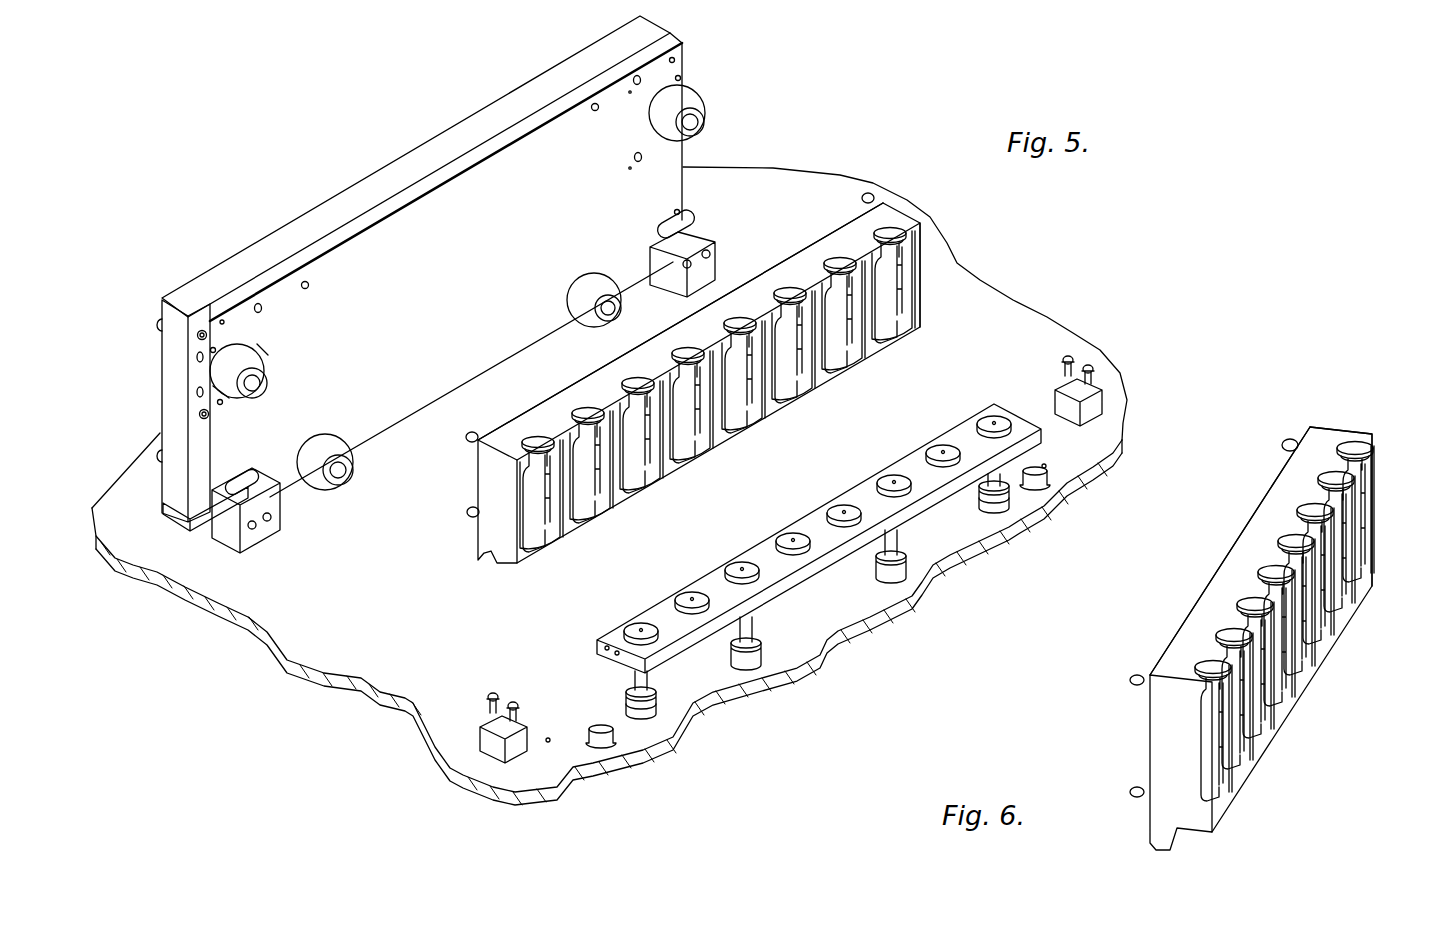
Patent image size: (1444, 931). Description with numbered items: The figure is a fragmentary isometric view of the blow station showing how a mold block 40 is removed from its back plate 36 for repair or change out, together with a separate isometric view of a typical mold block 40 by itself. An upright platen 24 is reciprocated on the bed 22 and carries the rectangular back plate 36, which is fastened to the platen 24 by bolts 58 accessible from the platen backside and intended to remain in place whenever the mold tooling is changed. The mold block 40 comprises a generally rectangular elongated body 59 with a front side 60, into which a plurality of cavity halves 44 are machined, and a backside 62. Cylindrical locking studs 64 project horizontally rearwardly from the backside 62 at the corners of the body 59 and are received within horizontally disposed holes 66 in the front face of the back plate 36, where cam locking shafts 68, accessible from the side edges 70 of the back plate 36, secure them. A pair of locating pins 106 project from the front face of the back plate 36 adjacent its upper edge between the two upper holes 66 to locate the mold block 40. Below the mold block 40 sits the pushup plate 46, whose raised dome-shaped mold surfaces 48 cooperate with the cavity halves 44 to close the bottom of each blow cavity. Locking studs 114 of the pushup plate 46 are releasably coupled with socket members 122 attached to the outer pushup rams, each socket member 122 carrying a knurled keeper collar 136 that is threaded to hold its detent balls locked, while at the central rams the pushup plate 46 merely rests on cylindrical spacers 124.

In FIG. 5, the bed 22 is at (385, 678).
In FIG. 5, the platen 24 is at (175, 365).
In FIG. 5, the back plate 36 is at (430, 171).
In FIG. 5, the mold block 40 is at (700, 350).
In FIG. 6, the mold block 40 is at (1248, 597).
In FIG. 5, the cavity half 44 is at (690, 425).
In FIG. 6, the cavity half 44 is at (1226, 752).
In FIG. 5, the pushup plate 46 is at (1019, 405).
In FIG. 5, the mold surface 48 is at (790, 540).
In FIG. 5, the bolt 58 is at (157, 323).
In FIG. 5, the body 59 is at (796, 264).
In FIG. 6, the body 59 is at (1262, 527).
In FIG. 5, the front side 60 is at (912, 236).
In FIG. 6, the front side 60 is at (1374, 532).
In FIG. 5, the backside 62 is at (570, 388).
In FIG. 6, the backside 62 is at (1205, 597).
In FIG. 5, the locking stud 64 is at (466, 438).
In FIG. 6, the locking stud 64 is at (1282, 444).
In FIG. 5, the hole 66 is at (645, 82).
In FIG. 5, the cam locking shaft 68 is at (202, 330).
In FIG. 5, the side edge 70 is at (200, 478).
In FIG. 5, the locating pin 106 is at (596, 110).
In FIG. 5, the locking stud 114 is at (1000, 476).
In FIG. 5, the socket member 122 is at (1022, 509).
In FIG. 5, the cylindrical spacer 124 is at (892, 548).
In FIG. 5, the keeper collar 136 is at (985, 503).